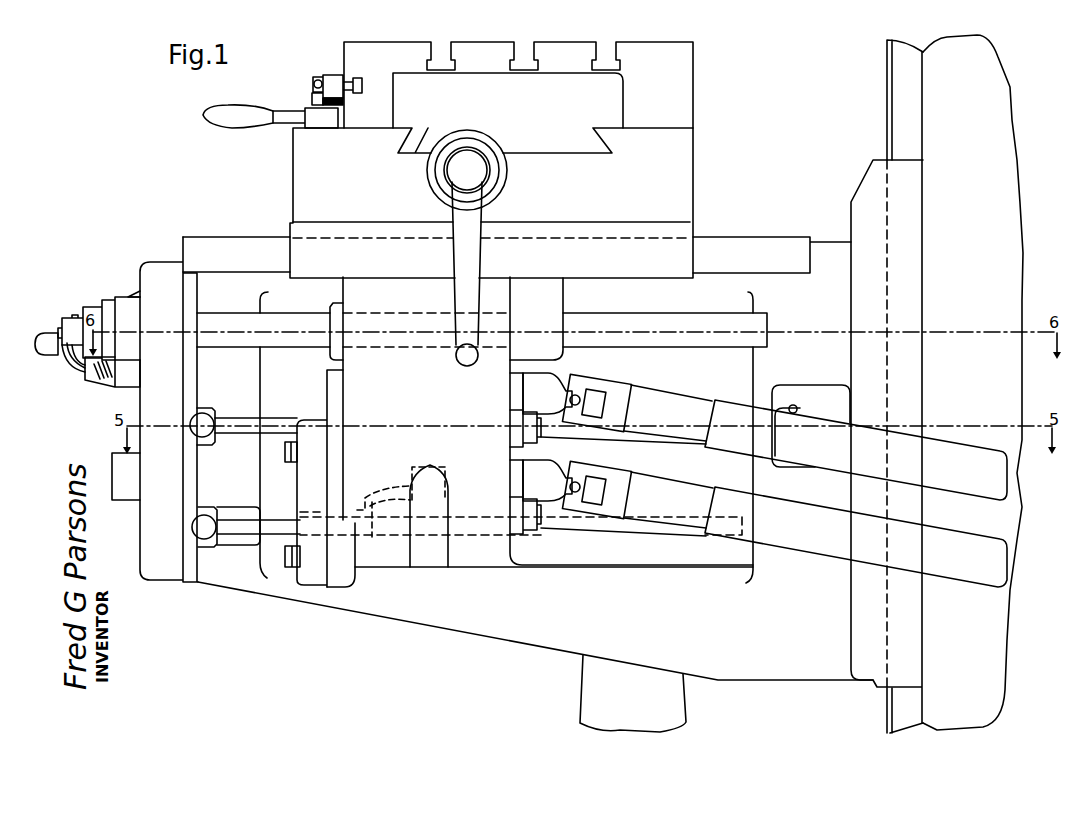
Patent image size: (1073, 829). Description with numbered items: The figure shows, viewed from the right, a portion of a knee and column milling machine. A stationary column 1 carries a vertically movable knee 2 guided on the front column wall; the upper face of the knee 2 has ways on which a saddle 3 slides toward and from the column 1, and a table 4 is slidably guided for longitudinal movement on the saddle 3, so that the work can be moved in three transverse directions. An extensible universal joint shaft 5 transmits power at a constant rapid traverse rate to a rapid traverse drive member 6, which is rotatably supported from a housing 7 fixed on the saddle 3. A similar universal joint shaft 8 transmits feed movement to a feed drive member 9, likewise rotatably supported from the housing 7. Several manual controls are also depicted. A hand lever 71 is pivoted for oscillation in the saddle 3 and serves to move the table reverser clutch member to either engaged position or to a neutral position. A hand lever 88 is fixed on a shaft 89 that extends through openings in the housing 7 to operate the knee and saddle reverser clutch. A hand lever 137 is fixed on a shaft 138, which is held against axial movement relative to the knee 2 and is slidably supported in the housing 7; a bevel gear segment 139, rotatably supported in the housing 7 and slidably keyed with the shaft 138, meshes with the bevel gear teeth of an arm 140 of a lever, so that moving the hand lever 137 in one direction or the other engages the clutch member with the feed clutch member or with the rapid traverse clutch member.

The column 1 is at (888, 107).
The knee 2 is at (776, 247).
The saddle 3 is at (693, 168).
The table 4 is at (693, 80).
The extensible universal joint shaft 5 is at (730, 410).
The rapid traverse drive member 6 is at (547, 381).
The housing 7 is at (345, 365).
The universal joint shaft 8 is at (781, 543).
The feed drive member 9 is at (548, 507).
The hand lever 71 is at (223, 125).
The hand lever 88 is at (204, 413).
The shaft 89 is at (278, 419).
The hand lever 137 is at (206, 513).
The shaft 138 is at (275, 524).
The bevel gear segment 139 is at (370, 543).
The arm 140 is at (388, 493).